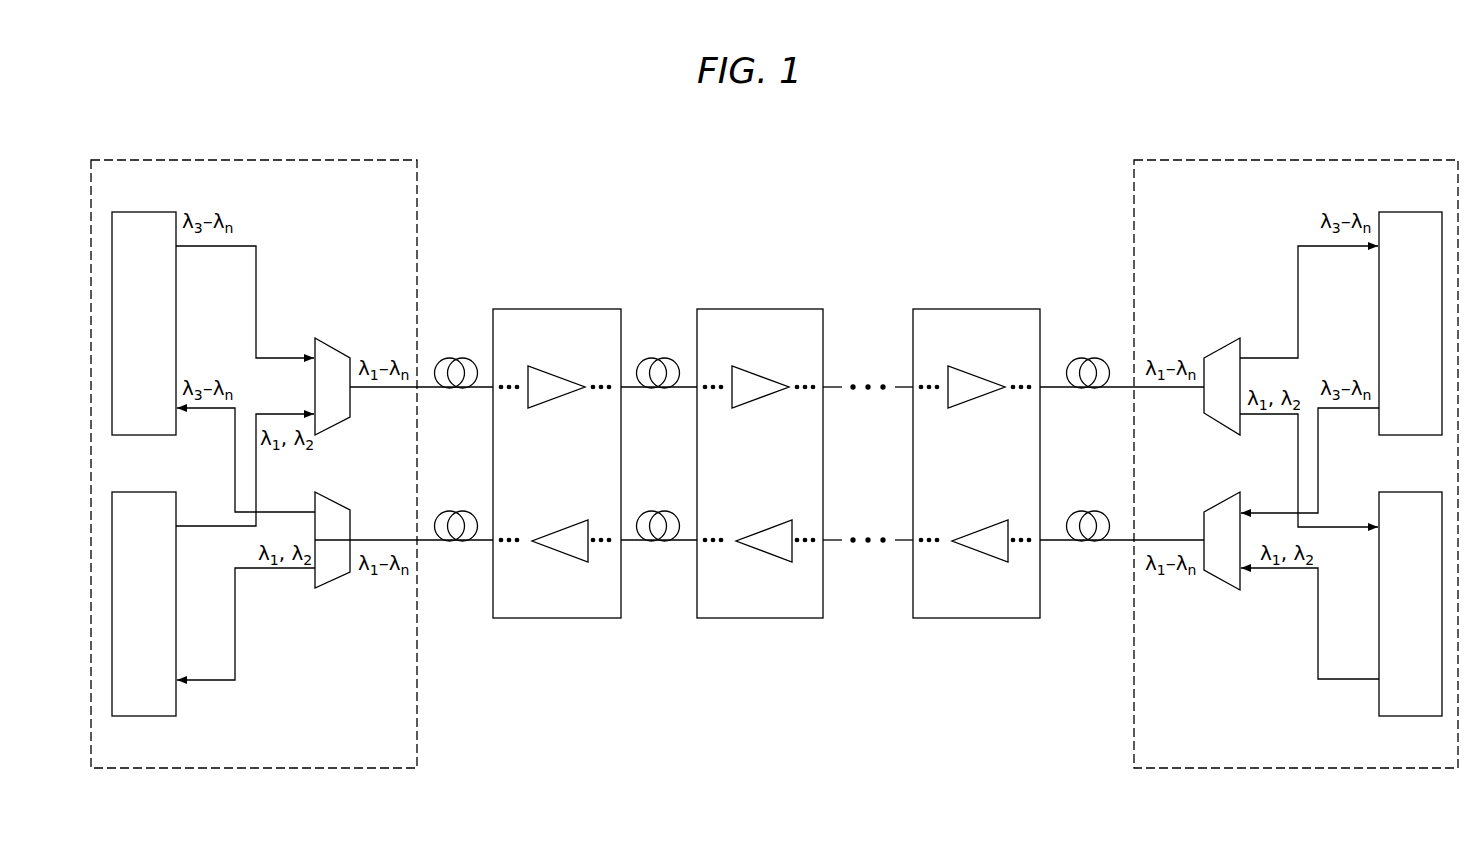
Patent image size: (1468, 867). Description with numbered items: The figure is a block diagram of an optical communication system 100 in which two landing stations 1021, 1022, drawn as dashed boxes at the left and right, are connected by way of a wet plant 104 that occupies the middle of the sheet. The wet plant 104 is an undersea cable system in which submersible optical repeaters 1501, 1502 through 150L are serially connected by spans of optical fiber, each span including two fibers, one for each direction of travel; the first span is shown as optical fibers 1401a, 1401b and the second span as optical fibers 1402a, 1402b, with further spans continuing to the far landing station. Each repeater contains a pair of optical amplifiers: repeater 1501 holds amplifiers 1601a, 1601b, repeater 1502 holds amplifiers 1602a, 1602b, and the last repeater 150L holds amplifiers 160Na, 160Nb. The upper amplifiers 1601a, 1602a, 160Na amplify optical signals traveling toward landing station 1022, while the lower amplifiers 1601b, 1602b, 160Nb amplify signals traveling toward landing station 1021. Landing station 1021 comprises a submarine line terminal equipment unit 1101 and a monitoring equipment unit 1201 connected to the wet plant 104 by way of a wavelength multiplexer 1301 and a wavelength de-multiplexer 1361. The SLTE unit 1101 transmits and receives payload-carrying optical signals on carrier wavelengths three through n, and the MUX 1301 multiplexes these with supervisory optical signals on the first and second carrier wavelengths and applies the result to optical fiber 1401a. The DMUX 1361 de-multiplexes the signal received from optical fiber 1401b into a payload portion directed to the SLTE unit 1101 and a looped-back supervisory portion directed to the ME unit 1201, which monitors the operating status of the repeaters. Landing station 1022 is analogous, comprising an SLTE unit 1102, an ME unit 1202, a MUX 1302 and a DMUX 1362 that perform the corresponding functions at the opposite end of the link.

The optical communication system 100 is at (778, 128).
The wet plant 104 is at (922, 198).
The landing station 1021 is at (346, 160).
The landing station 1022 is at (1387, 160).
The submarine line terminal equipment unit 1101 is at (160, 212).
The submarine line terminal equipment unit 1102 is at (1388, 212).
The monitoring equipment unit 1201 is at (160, 716).
The monitoring equipment unit 1202 is at (1390, 716).
The wavelength multiplexer 1301 is at (338, 343).
The wavelength multiplexer 1302 is at (1218, 580).
The wavelength de-multiplexer 1361 is at (338, 578).
The wavelength de-multiplexer 1362 is at (1218, 350).
The optical fiber 1401a is at (456, 358).
The optical fiber 1401b is at (456, 511).
The optical fiber 1402a is at (658, 358).
The optical fiber 1402b is at (658, 511).
The optical repeater 1501 is at (560, 309).
The optical repeater 1502 is at (760, 309).
The optical repeater 150L is at (965, 309).
The optical amplifier 1601a is at (560, 377).
The optical amplifier 1601b is at (560, 551).
The optical amplifier 1602a is at (764, 377).
The optical amplifier 1602b is at (764, 551).
The optical amplifier 160Na is at (980, 377).
The optical amplifier 160Nb is at (980, 551).